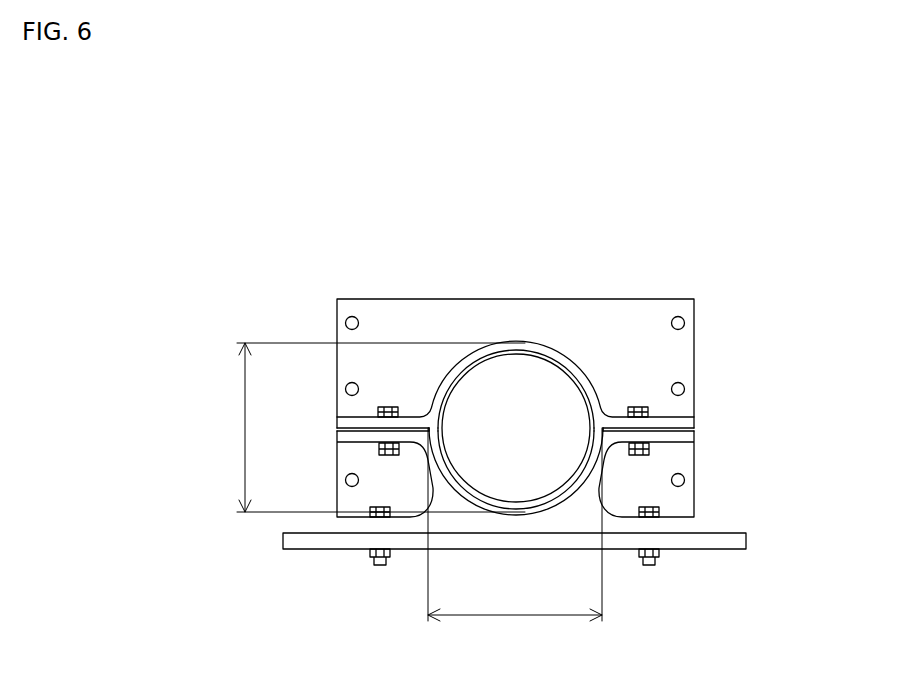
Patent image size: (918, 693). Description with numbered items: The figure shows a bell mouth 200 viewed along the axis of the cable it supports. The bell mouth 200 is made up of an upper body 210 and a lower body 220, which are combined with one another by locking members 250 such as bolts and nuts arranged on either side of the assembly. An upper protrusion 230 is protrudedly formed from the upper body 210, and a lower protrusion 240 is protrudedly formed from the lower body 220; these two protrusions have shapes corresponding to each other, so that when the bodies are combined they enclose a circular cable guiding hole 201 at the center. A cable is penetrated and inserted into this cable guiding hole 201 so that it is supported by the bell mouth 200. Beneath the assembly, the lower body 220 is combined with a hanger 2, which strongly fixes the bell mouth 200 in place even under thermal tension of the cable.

The bell mouth 200 is at (336, 225).
The upper body 210 is at (407, 322).
The upper protrusion 230 is at (495, 348).
The lower protrusion 240 is at (592, 455).
The cable guiding hole 201 is at (514, 425).
The lower body 220 is at (667, 528).
The hanger 2 is at (720, 542).
The locking member 250 is at (636, 406).